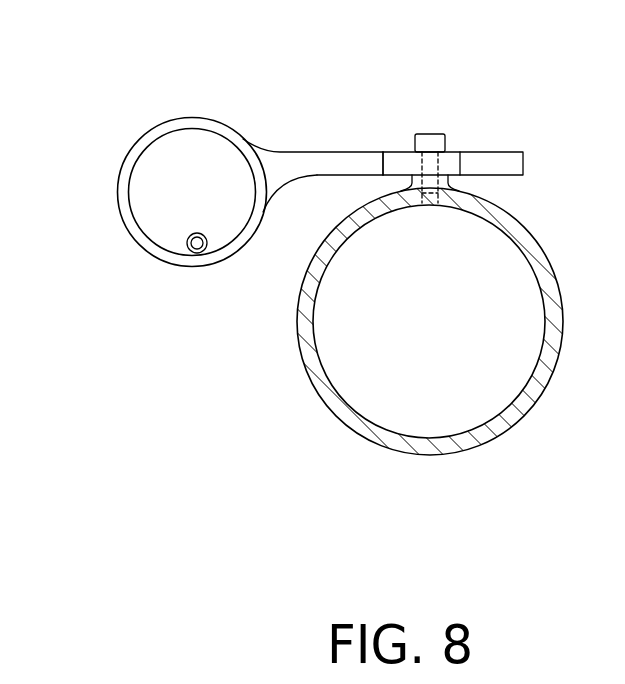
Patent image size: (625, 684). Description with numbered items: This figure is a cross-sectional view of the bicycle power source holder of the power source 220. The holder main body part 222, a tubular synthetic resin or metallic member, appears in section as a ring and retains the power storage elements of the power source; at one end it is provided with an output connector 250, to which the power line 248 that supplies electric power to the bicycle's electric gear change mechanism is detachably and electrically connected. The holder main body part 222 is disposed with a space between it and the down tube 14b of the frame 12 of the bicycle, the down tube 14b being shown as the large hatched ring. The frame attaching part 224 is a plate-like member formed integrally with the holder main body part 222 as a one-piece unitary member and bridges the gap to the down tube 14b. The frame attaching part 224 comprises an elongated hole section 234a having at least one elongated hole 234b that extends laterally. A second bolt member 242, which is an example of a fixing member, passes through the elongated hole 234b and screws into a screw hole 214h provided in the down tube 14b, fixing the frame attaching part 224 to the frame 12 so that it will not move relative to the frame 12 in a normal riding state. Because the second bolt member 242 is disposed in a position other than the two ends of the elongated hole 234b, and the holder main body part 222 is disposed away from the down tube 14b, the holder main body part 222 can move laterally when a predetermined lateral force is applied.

The frame 12 is at (333, 429).
The down tube 14b is at (413, 454).
The holder main body part 222 is at (151, 115).
The frame attaching part 224 is at (309, 140).
The power source 220 is at (509, 136).
The screw hole 214h is at (456, 151).
The elongated hole section 234a is at (400, 160).
The elongated hole 234b is at (383, 165).
The second bolt member 242 is at (432, 176).
The power line 248 is at (187, 240).
The output connector 250 is at (184, 254).